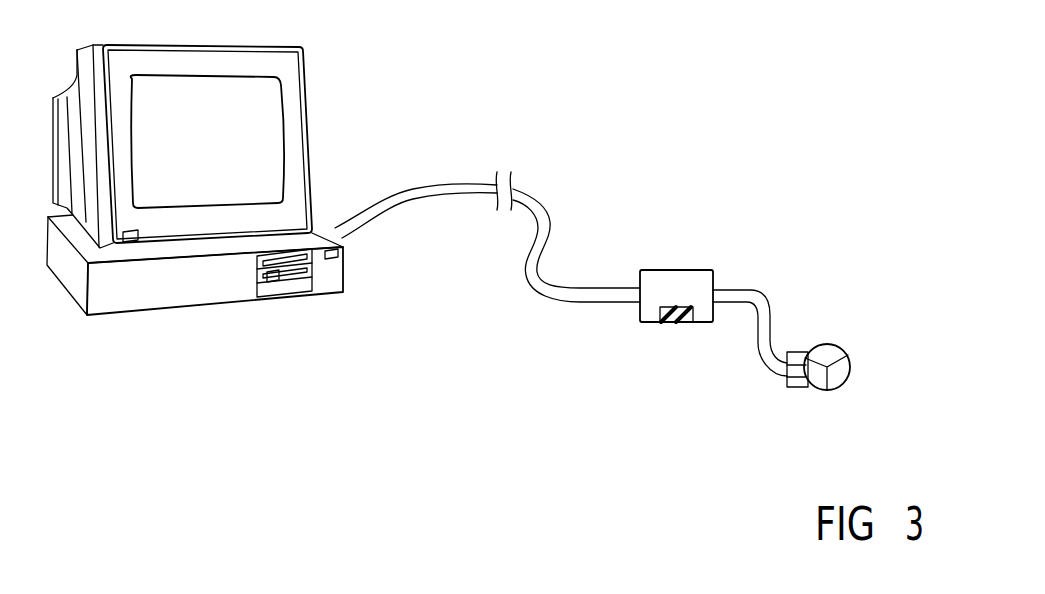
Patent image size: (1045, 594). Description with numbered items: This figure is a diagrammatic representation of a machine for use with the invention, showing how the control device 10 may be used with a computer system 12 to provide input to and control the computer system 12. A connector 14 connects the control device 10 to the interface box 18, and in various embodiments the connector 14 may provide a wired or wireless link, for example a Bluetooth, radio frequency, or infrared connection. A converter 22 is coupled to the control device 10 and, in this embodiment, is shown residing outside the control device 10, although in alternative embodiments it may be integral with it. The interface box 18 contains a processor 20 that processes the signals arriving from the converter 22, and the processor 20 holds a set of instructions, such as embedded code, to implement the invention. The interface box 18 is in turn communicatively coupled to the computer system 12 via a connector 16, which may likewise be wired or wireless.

The control device 10 is at (850, 388).
The computer system 12 is at (205, 290).
The connector 14 is at (736, 293).
The connector 16 is at (418, 188).
The interface box 18 is at (677, 282).
The processor 20 is at (676, 322).
The converter 22 is at (790, 348).